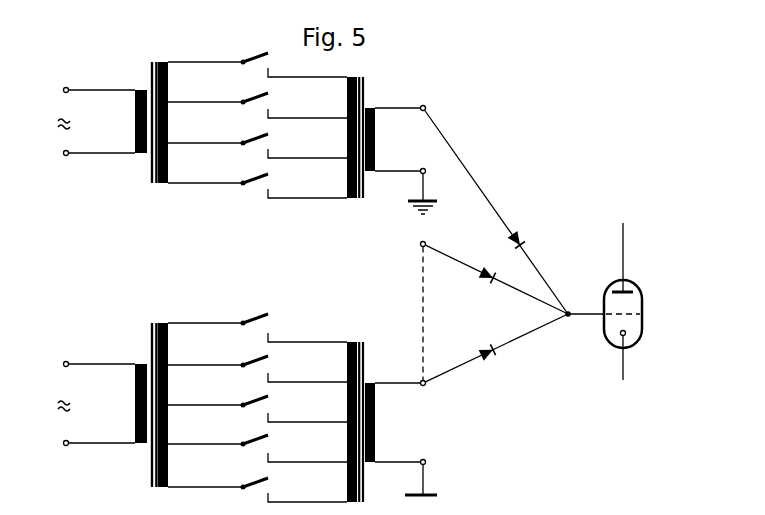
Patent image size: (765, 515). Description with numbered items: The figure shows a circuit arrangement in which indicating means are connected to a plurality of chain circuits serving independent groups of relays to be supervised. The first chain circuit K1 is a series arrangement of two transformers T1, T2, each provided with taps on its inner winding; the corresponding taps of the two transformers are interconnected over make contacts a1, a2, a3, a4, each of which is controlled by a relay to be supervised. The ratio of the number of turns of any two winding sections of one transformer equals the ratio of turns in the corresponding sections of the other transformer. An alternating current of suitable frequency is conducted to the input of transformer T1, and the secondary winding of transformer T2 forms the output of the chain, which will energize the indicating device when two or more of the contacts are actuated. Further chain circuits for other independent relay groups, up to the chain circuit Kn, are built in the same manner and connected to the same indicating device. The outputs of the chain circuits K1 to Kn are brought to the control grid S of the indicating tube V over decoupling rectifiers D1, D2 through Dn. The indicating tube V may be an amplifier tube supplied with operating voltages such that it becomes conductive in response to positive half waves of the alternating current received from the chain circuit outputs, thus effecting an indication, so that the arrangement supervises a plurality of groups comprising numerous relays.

The chain circuit K1 is at (247, 132).
The transformer T1 is at (150, 133).
The make contact a1 is at (294, 58).
The make contact a2 is at (294, 100).
The make contact a3 is at (294, 140).
The make contact a4 is at (294, 181).
The transformer T2 is at (392, 151).
The chain circuit Kn is at (247, 403).
The decoupling rectifier D1 is at (497, 212).
The decoupling rectifier D2 is at (497, 279).
The decoupling rectifier Dn is at (497, 348).
The control grid S is at (584, 306).
The indicating tube V is at (629, 301).